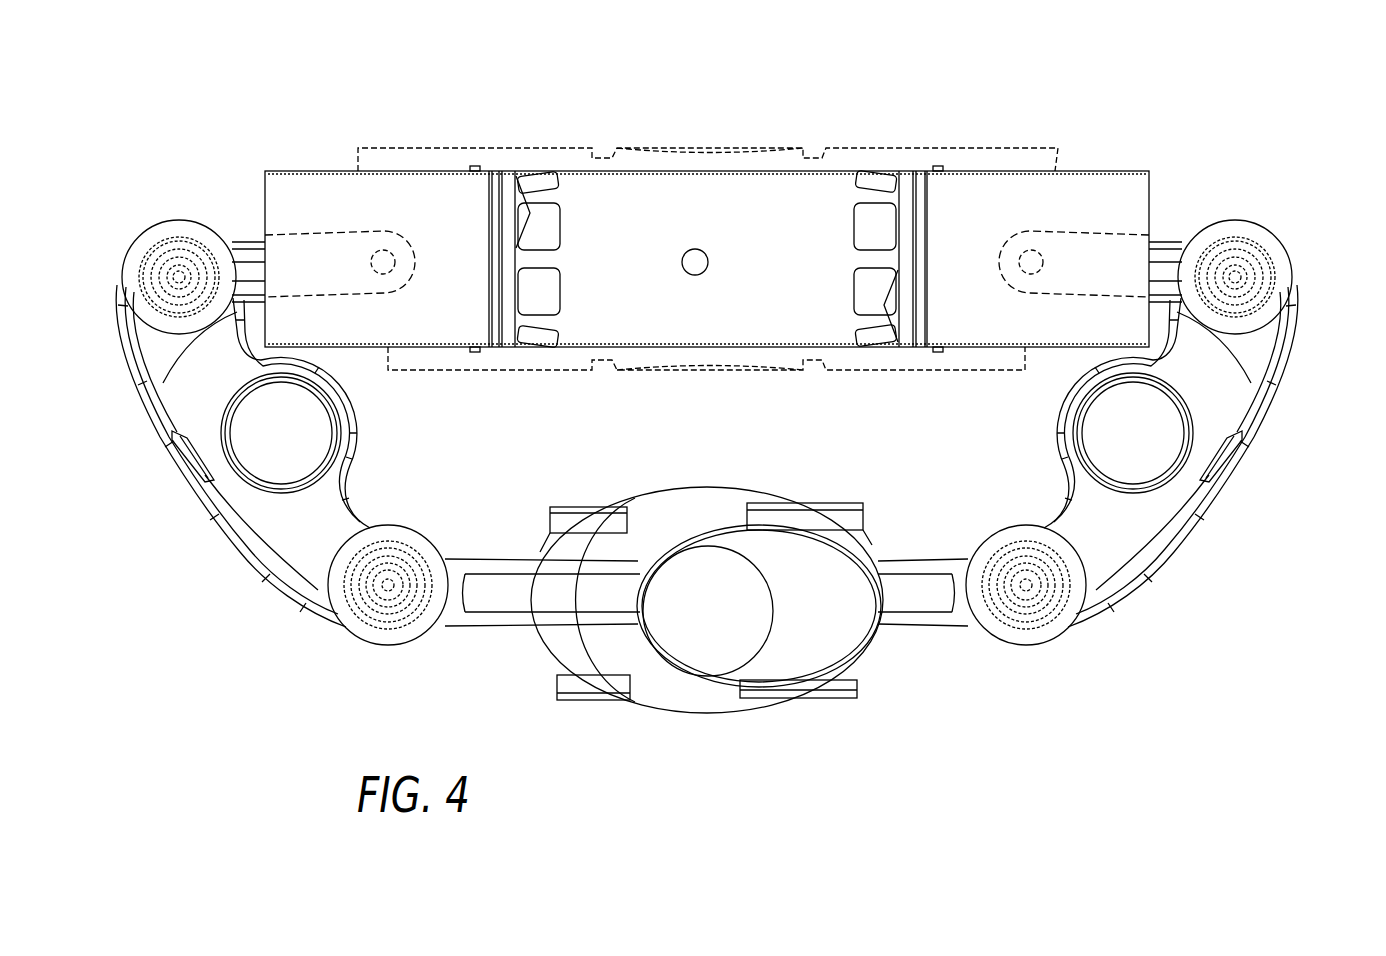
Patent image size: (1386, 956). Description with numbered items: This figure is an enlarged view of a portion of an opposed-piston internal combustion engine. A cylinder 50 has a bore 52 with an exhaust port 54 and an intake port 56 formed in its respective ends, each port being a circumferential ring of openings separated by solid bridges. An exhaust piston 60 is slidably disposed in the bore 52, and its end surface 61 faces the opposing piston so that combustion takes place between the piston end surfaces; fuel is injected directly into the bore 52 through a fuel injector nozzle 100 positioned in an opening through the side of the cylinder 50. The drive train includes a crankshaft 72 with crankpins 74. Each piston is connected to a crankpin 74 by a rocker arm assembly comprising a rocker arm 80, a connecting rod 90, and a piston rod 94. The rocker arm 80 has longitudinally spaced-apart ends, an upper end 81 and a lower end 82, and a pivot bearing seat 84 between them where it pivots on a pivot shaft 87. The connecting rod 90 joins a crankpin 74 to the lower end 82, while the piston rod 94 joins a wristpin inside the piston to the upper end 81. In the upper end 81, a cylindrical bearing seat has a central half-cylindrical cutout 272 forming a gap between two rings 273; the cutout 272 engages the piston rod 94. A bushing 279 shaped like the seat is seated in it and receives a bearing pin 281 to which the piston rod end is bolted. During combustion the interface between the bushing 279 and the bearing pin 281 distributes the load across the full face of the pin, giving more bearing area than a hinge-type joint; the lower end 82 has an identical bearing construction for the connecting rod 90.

The cylinder 50 is at (858, 150).
The bore 52 is at (692, 187).
The exhaust port 54 is at (567, 253).
The intake port 56 is at (844, 203).
The exhaust piston 60 is at (322, 172).
The end surface 61 is at (1073, 172).
The crankshaft 72 is at (640, 718).
The crankpin 74 is at (785, 662).
The rocker arm 80 is at (714, 456).
The upper end 81 is at (724, 241).
The lower end 82 is at (377, 660).
The pivot bearing seat 84 is at (230, 453).
The pivot shaft 87 is at (300, 417).
The connecting rod 90 is at (910, 620).
The piston rod 94 is at (248, 242).
The fuel injector nozzle 100 is at (695, 276).
The central half-cylindrical cutout 272 is at (1290, 290).
The rings 273 is at (1222, 230).
The bushing 279 is at (1255, 260).
The bearing pin 281 is at (1238, 362).